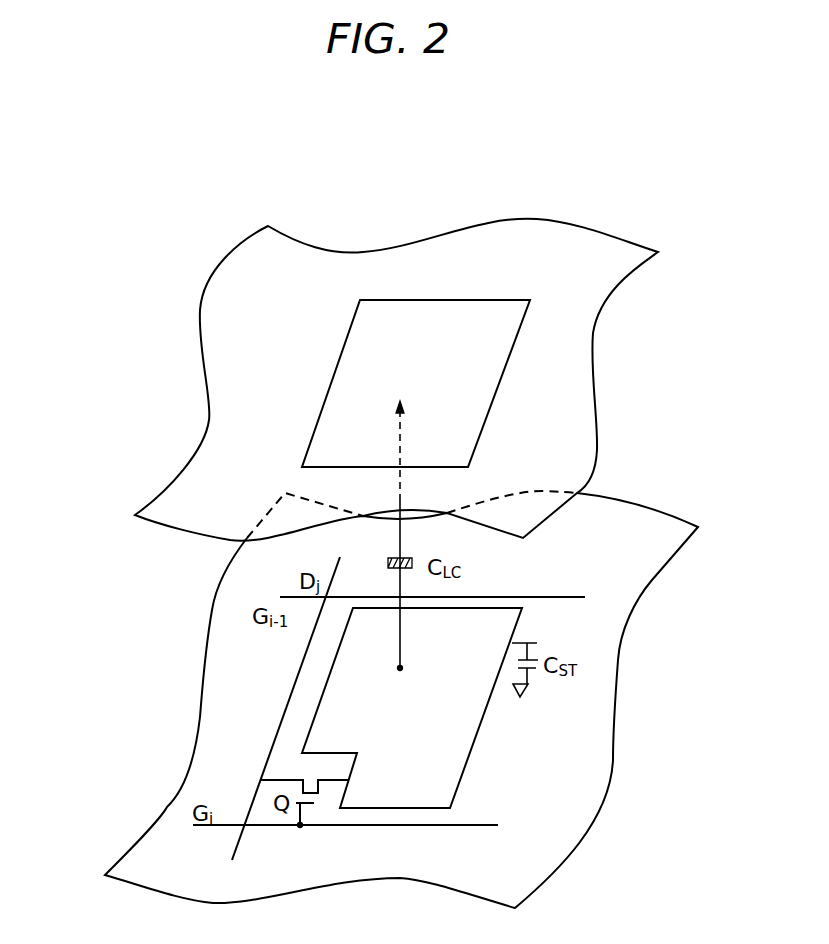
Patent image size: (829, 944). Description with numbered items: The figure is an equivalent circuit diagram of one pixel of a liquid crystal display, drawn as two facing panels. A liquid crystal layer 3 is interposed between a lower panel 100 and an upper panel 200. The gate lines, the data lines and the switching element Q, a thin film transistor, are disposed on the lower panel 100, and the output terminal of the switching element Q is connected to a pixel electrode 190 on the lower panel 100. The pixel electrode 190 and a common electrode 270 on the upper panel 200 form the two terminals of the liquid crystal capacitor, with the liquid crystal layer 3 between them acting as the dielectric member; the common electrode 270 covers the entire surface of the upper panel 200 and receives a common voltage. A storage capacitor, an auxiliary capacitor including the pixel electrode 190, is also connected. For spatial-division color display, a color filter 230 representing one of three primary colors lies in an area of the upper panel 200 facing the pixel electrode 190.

The liquid crystal layer 3 is at (136, 609).
The lower panel 100 is at (619, 682).
The pixel electrode 190 is at (470, 753).
The upper panel 200 is at (419, 380).
The color filter 230 is at (498, 400).
The common electrode 270 is at (602, 407).